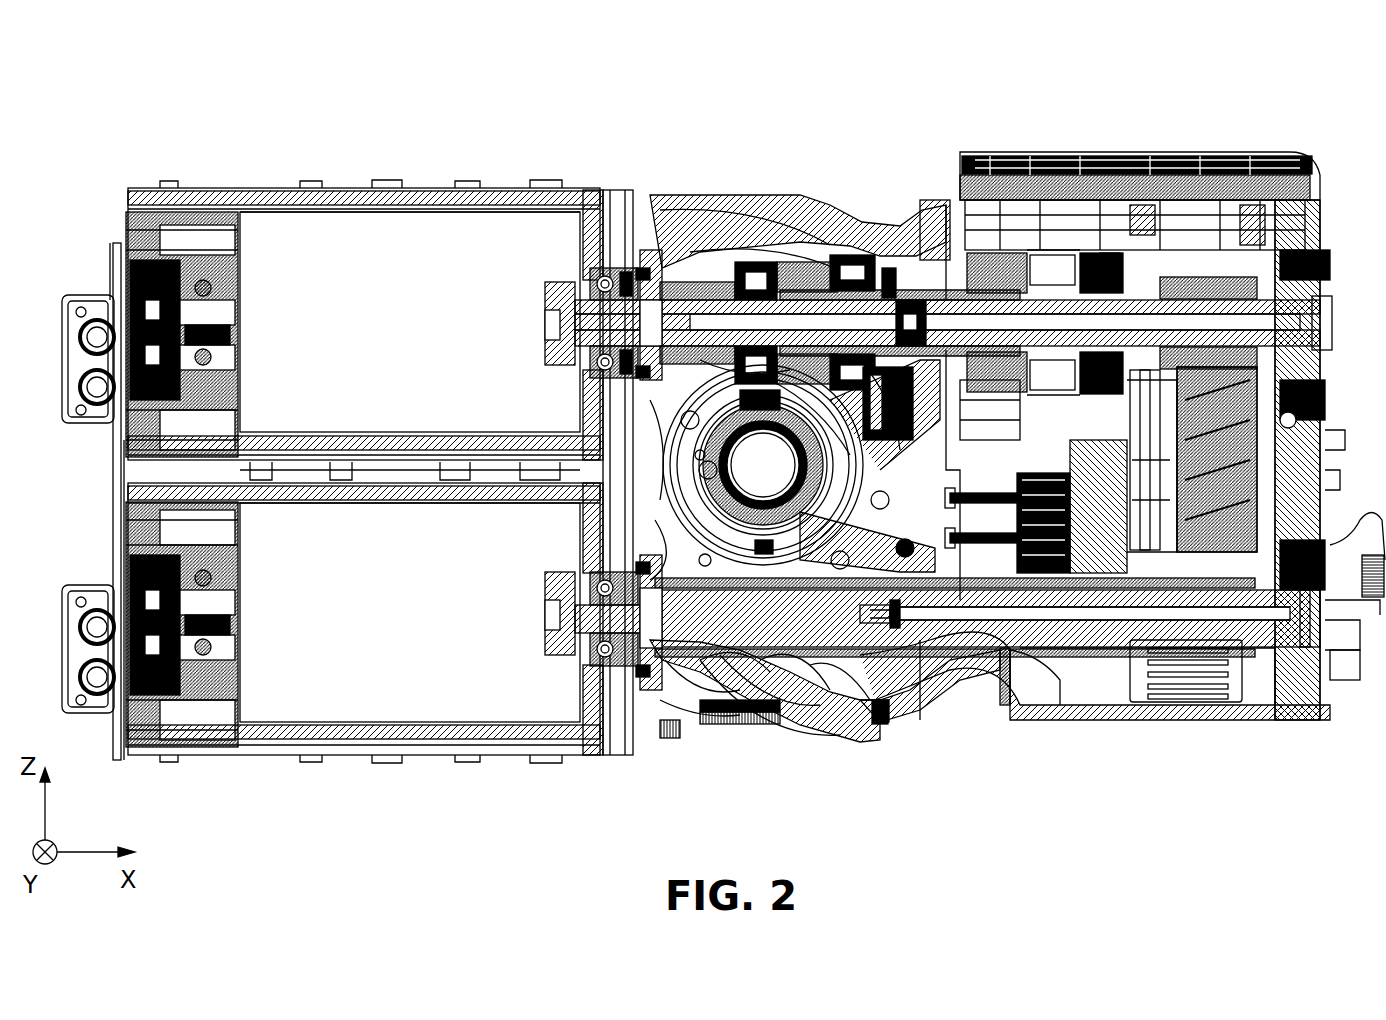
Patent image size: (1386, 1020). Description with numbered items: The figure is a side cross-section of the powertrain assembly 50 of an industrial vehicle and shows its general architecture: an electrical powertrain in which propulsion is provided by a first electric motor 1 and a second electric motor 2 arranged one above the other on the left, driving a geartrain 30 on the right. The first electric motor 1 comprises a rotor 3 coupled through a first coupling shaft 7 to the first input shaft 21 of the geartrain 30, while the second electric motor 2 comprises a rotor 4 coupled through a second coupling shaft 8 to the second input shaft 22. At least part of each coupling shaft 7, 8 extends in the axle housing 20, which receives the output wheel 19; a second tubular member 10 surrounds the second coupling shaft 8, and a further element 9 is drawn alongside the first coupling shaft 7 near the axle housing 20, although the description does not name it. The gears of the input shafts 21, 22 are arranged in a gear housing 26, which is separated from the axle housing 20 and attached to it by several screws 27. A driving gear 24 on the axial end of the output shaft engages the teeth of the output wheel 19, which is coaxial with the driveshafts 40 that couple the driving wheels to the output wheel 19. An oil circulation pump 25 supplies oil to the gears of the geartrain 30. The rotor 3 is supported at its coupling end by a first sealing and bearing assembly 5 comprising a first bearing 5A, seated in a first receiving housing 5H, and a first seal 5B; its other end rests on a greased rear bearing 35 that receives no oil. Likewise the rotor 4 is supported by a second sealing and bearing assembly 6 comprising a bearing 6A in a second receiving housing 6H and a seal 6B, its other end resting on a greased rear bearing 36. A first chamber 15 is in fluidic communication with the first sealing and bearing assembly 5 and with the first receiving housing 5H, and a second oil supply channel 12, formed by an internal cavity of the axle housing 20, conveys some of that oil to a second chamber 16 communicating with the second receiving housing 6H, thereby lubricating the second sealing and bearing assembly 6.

The first electric motor 1 is at (340, 153).
The second electric motor 2 is at (340, 784).
The rotor 3 is at (548, 285).
The rotor 4 is at (555, 650).
The first sealing and bearing assembly 5 is at (574, 88).
The first bearing 5A is at (600, 278).
The first receiving housing 5H is at (607, 280).
The first seal 5B is at (641, 270).
The second sealing and bearing assembly 6 is at (530, 824).
The bearing 6A is at (598, 668).
The second receiving housing 6H is at (592, 668).
The seal 6B is at (628, 668).
The first coupling shaft 7 is at (690, 300).
The second coupling shaft 8 is at (745, 720).
The gear 9 is at (712, 330).
The second tubular member 10 is at (905, 640).
The second oil supply channel 12 is at (640, 500).
The first chamber 15 is at (652, 300).
The second chamber 16 is at (655, 668).
The output wheel 19 is at (882, 712).
The axle housing 20 is at (740, 350).
The first input shaft 21 is at (893, 330).
The second input shaft 22 is at (968, 612).
The driving gear 24 is at (928, 515).
The oil circulation pump 25 is at (1200, 680).
The gear housing 26 is at (992, 170).
The screws 27 is at (890, 268).
The geartrain 30 is at (1098, 120).
The rear bearing 35 is at (205, 280).
The rear bearing 36 is at (203, 645).
The driveshafts 40 is at (768, 480).
The powertrain assembly 50 is at (756, 88).